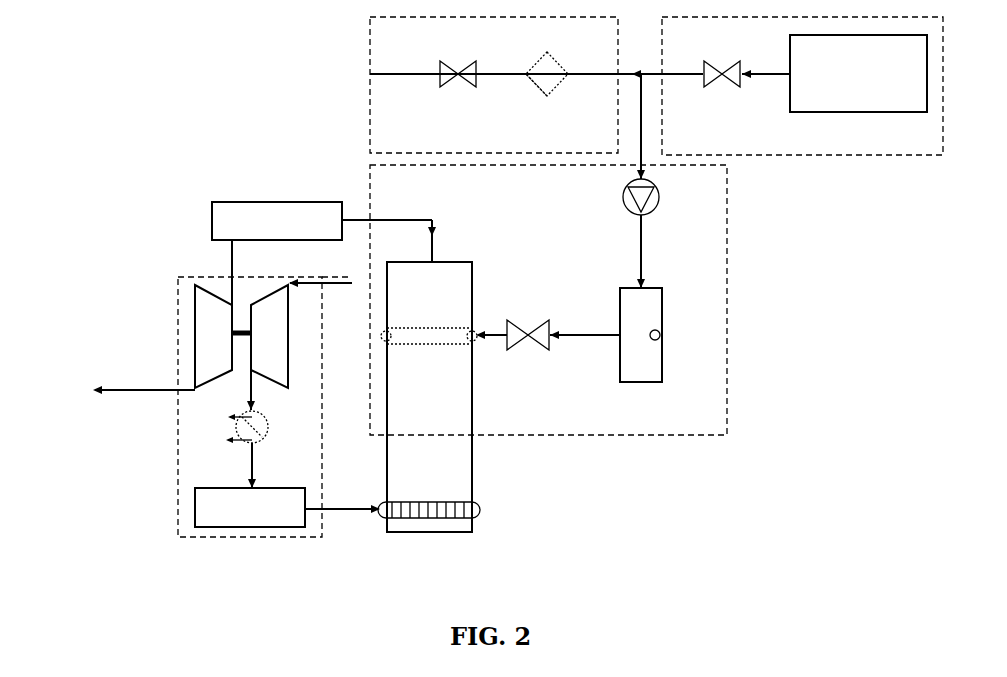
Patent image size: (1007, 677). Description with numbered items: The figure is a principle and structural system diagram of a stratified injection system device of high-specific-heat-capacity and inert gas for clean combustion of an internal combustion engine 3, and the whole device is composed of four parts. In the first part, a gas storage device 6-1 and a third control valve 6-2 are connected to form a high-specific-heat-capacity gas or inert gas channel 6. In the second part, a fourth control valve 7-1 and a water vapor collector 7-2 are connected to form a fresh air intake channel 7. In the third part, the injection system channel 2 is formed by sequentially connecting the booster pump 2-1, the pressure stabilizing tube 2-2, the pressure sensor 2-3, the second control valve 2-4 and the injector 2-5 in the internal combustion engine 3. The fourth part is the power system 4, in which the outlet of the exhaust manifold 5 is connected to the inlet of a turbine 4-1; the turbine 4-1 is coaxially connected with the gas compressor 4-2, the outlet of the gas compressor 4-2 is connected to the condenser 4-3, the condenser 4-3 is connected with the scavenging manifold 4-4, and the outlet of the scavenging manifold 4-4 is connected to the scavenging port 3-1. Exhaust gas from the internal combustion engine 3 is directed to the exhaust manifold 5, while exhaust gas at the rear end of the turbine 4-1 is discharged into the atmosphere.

The injection system channel 2 is at (565, 435).
The booster pump 2-1 is at (625, 195).
The pressure stabilizing tube 2-2 is at (720, 417).
The pressure sensor 2-3 is at (720, 373).
The second control valve 2-4 is at (535, 348).
The injector 2-5 is at (448, 378).
The internal combustion engine 3 is at (425, 532).
The scavenging port 3-1 is at (480, 515).
The power system 4 is at (248, 537).
The turbine 4-1 is at (202, 392).
The gas compressor 4-2 is at (343, 424).
The condenser 4-3 is at (318, 467).
The scavenging manifold 4-4 is at (287, 507).
The exhaust manifold 5 is at (277, 253).
The high-specific-heat-capacity gas or inert gas channel 6 is at (813, 155).
The gas storage device 6-1 is at (905, 140).
The third control valve 6-2 is at (712, 92).
The fresh air intake channel 7 is at (368, 103).
The fourth control valve 7-1 is at (443, 95).
The water vapor collector 7-2 is at (540, 85).